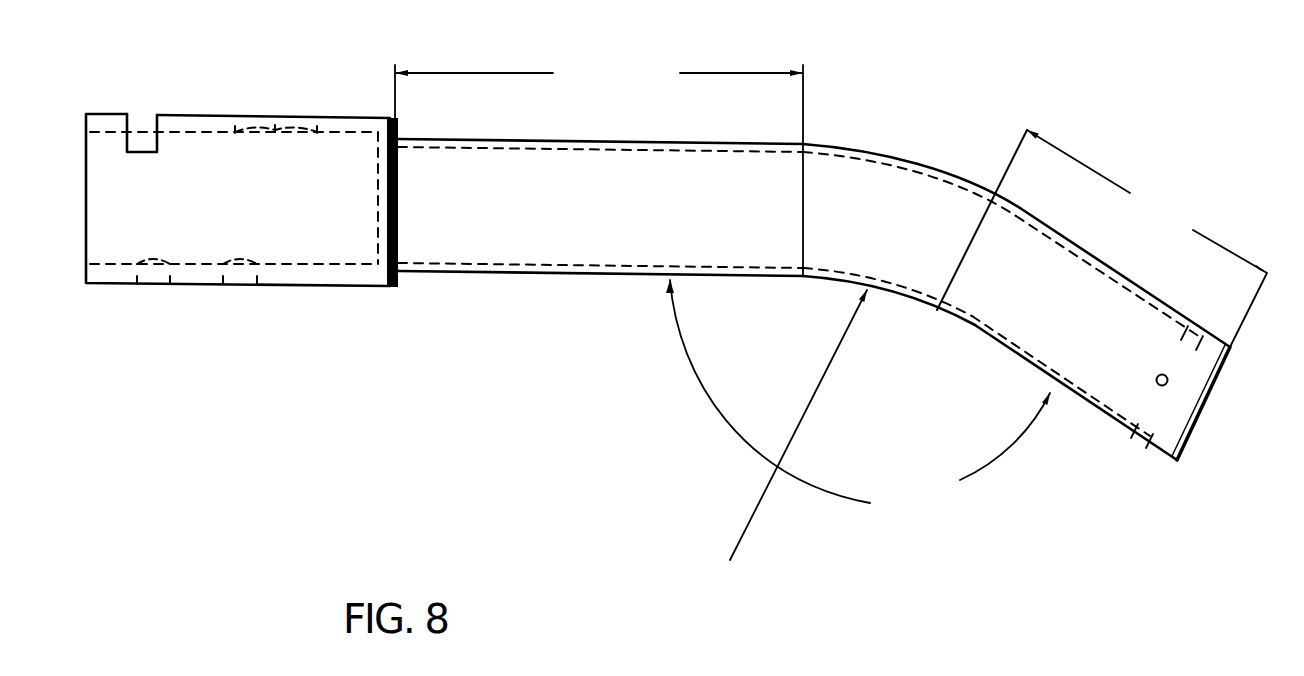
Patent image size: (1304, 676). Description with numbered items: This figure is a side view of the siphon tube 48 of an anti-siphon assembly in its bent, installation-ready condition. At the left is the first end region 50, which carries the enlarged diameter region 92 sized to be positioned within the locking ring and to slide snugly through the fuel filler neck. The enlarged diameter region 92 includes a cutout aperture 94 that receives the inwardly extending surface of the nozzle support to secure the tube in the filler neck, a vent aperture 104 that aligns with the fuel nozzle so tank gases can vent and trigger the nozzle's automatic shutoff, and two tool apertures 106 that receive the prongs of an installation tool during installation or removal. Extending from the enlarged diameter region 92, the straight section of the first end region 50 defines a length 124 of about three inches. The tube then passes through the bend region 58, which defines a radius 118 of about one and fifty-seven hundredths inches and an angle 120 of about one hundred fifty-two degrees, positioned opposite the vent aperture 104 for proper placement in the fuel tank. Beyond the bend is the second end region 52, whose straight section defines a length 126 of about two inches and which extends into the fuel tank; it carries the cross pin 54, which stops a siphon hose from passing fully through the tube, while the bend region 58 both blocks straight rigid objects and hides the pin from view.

The siphon tube 48 is at (841, 276).
The first end region 50 is at (438, 160).
The second end region 52 is at (1112, 285).
The cross pin 54 is at (1168, 380).
The bend region 58 is at (830, 283).
The enlarged diameter region 92 is at (297, 287).
The aperture 94 is at (157, 132).
The vent aperture 104 is at (278, 117).
The tool apertures 106 is at (230, 320).
The radius 118 is at (786, 450).
The angle 120 is at (858, 402).
The length 124 is at (599, 169).
The length 126 is at (1147, 238).